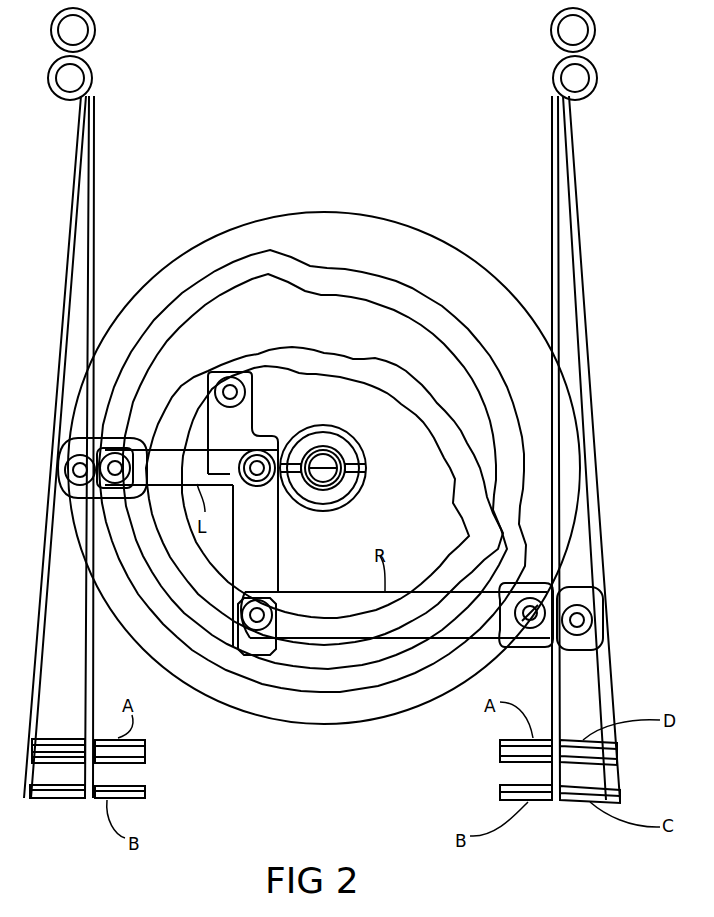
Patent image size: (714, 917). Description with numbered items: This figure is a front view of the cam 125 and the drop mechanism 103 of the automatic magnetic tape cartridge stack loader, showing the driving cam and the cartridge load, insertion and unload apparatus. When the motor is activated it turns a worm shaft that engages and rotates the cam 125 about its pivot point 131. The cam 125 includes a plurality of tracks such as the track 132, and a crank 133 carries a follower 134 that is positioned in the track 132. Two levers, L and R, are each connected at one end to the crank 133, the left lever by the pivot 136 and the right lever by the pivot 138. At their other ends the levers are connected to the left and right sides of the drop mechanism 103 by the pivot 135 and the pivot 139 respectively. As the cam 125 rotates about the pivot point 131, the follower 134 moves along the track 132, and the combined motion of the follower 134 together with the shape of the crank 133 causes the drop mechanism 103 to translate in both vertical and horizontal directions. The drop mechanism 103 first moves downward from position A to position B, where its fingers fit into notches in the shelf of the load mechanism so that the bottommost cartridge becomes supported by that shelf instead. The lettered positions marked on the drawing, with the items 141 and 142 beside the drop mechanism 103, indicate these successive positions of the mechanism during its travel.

The drop mechanism 103 is at (548, 190).
The cam 125 is at (453, 250).
The pivot point 131 is at (367, 460).
The track 132 is at (379, 390).
The crank 133 is at (240, 414).
The follower 134 is at (246, 394).
The pivot 135 is at (145, 437).
The pivot 136 is at (252, 484).
The pivot 138 is at (235, 612).
The pivot 139 is at (512, 640).
The left clamp band 141 is at (143, 741).
The right clamp band 142 is at (500, 753).